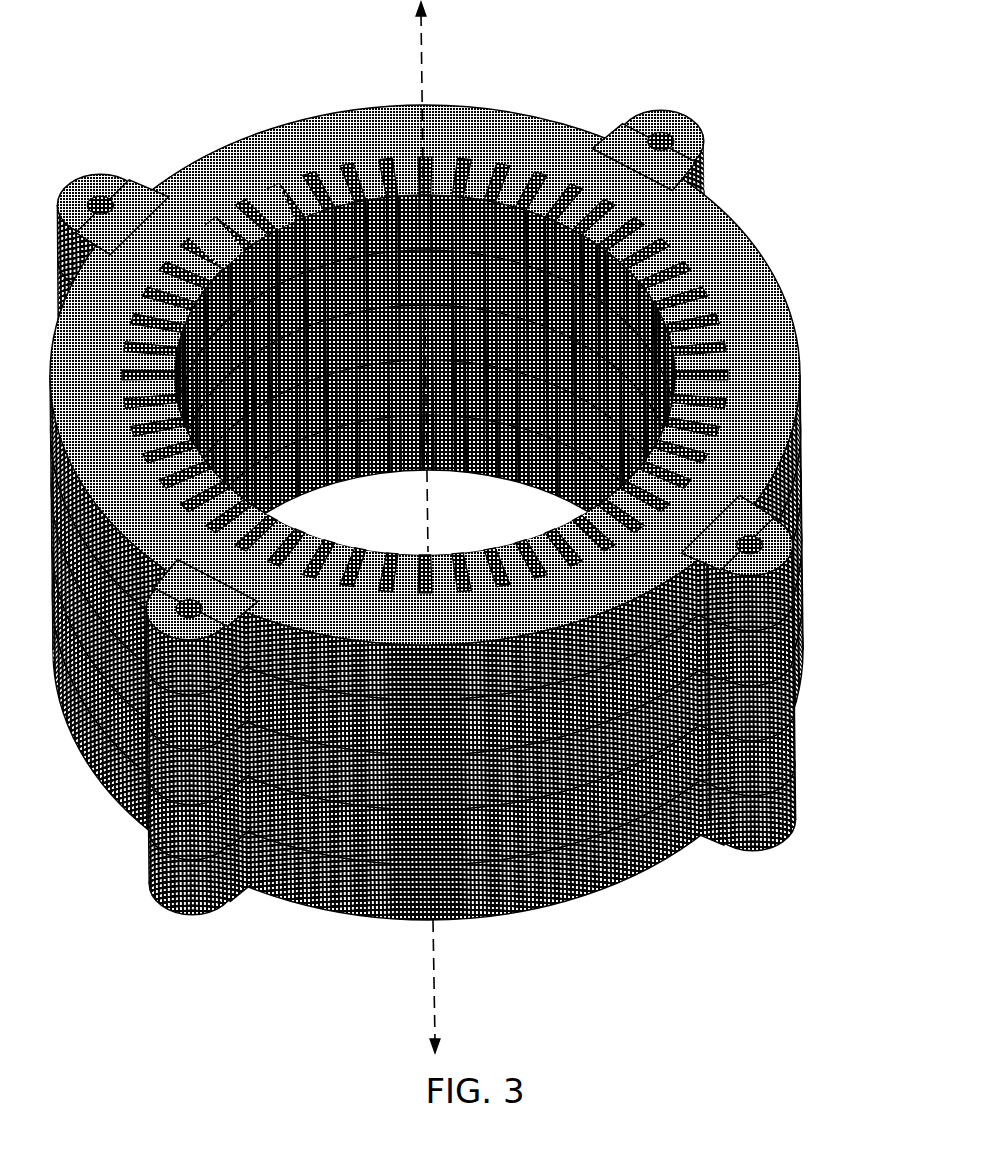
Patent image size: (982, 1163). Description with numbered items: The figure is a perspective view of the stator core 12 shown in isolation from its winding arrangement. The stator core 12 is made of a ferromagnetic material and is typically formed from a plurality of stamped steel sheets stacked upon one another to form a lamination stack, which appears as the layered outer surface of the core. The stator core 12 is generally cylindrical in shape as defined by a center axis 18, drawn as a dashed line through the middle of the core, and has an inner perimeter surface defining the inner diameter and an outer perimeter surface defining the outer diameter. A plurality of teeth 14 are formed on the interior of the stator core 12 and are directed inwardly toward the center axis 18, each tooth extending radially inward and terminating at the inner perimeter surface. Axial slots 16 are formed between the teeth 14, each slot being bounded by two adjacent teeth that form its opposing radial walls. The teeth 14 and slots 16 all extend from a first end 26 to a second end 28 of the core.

The stator core 12 is at (463, 514).
The teeth 14 is at (360, 178).
The axial slots 16 is at (312, 188).
The center axis 18 is at (425, 93).
The first end 26 is at (775, 345).
The second end 28 is at (633, 867).